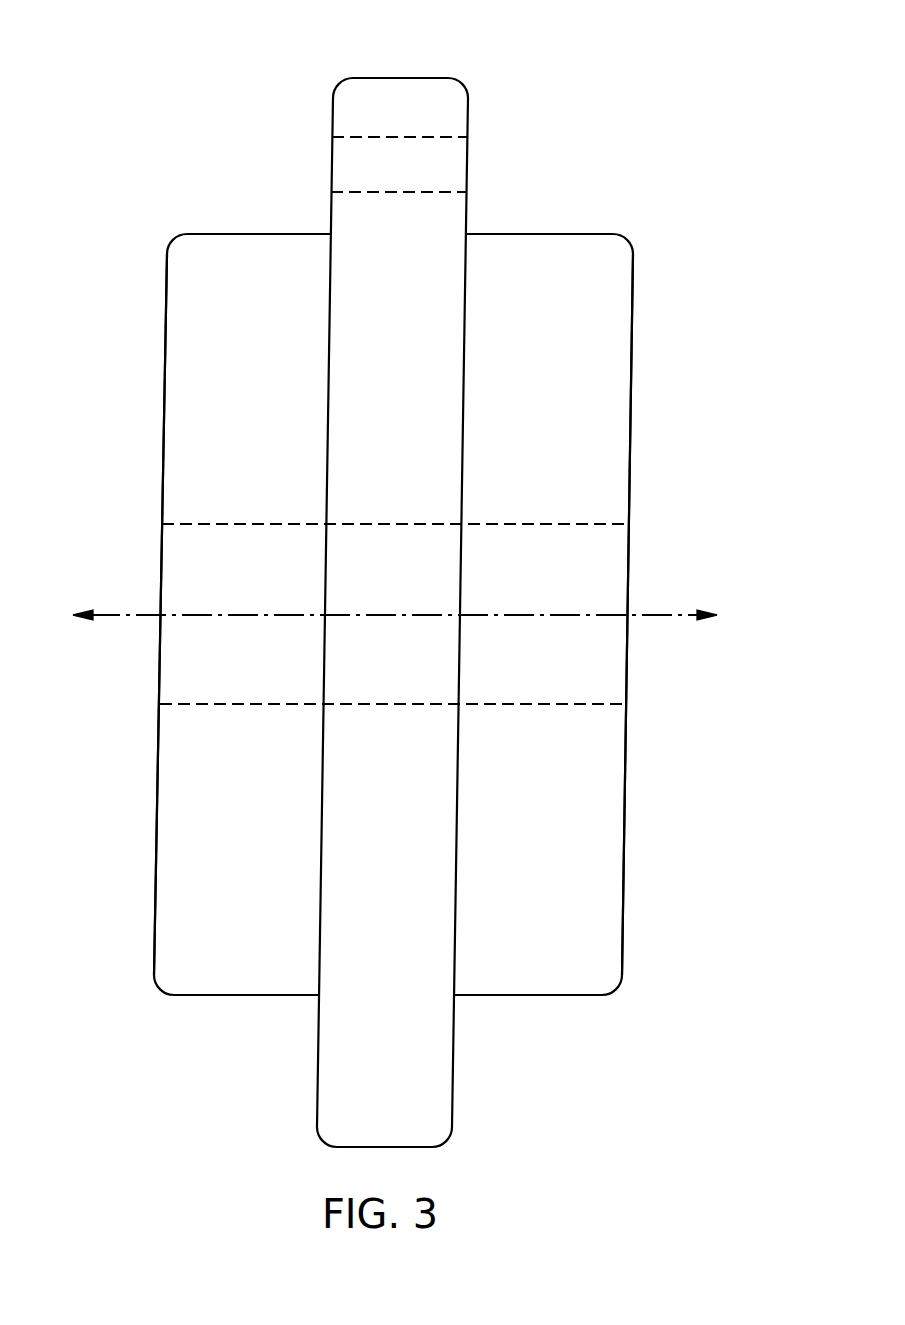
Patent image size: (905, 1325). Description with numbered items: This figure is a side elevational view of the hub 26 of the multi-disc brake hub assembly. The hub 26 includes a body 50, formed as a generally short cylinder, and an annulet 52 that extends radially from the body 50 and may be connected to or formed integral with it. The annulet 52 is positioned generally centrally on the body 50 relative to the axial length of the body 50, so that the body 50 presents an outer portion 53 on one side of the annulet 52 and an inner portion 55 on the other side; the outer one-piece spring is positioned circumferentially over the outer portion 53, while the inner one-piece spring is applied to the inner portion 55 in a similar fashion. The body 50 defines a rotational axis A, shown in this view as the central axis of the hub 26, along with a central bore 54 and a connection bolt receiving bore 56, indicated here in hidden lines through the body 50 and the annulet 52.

The hub 26 is at (121, 101).
The body 50 is at (602, 233).
The annulet 52 is at (402, 78).
The outer portion 53 is at (165, 283).
The central bore 54 is at (537, 527).
The inner portion 55 is at (633, 282).
The connection bolt receiving bore 56 is at (442, 138).
The rotational axis A is at (662, 615).